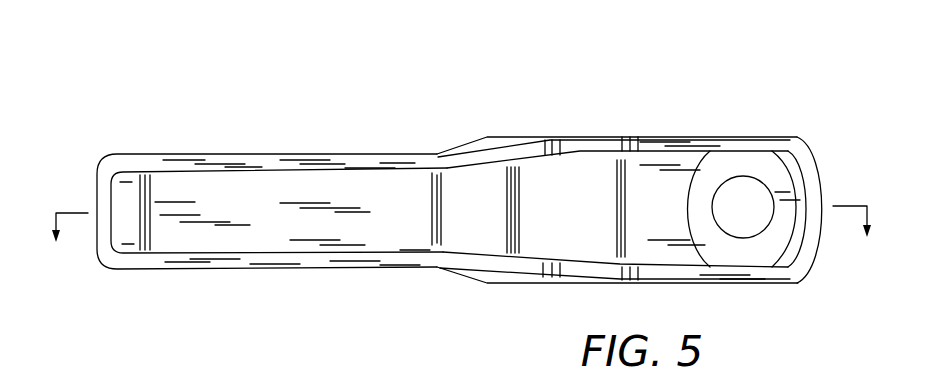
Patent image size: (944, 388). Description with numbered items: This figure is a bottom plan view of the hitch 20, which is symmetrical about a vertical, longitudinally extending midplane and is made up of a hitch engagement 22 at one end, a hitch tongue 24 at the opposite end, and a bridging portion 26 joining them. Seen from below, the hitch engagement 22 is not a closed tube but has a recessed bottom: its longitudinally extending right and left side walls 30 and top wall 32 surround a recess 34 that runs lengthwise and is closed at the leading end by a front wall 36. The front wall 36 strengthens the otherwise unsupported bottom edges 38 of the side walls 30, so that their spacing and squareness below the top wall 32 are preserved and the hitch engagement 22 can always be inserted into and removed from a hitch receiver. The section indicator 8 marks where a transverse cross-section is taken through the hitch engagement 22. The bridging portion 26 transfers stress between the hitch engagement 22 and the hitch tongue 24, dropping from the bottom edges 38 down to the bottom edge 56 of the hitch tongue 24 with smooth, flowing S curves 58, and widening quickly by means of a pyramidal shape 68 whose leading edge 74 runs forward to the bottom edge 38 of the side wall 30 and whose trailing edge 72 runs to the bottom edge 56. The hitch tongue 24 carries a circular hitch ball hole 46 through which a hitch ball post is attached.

The section line 8- 8 is at (461, 210).
The hitch 20 is at (288, 101).
The hitch engagement 22 is at (220, 140).
The hitch tongue 24 is at (730, 125).
The bridging portion 26 is at (518, 121).
The side wall 30 is at (362, 158).
The top wall 32 is at (203, 200).
The recess 34 is at (323, 228).
The front wall 36 is at (113, 222).
The bottom edges 38 is at (320, 158).
The hitch ball hole 46 is at (743, 215).
The bottom edge of the hitch tongue 56 is at (803, 272).
The S curves 58 is at (583, 139).
The pyramidal shape 68 is at (490, 135).
The trailing edge 72 is at (463, 147).
The leading edge 74 is at (508, 131).